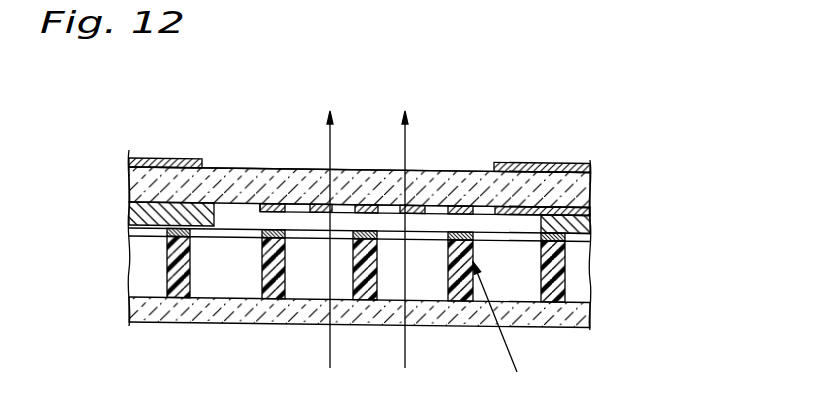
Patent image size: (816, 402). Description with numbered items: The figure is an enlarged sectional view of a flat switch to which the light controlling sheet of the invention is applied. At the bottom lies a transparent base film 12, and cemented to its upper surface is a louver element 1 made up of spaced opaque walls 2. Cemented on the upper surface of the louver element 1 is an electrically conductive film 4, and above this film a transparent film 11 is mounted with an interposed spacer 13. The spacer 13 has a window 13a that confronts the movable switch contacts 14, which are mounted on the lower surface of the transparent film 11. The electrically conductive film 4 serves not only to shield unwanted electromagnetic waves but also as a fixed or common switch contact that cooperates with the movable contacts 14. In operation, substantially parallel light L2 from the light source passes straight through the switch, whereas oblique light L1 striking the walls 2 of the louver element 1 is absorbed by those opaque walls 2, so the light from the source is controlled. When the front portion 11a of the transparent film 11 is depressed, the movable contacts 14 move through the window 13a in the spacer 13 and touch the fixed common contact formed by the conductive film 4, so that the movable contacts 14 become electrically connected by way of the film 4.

The louver element 1 is at (574, 262).
The walls 2 is at (557, 284).
The electrically conductive film 4 is at (563, 237).
The transparent film 11 is at (572, 186).
The front portion 11a is at (364, 172).
The transparent base film 12 is at (577, 318).
The spacer 13 is at (130, 212).
The window 13a is at (232, 210).
The movable switch contacts 14 is at (315, 210).
The oblique light L1 is at (500, 332).
The parallel light L2 is at (358, 256).